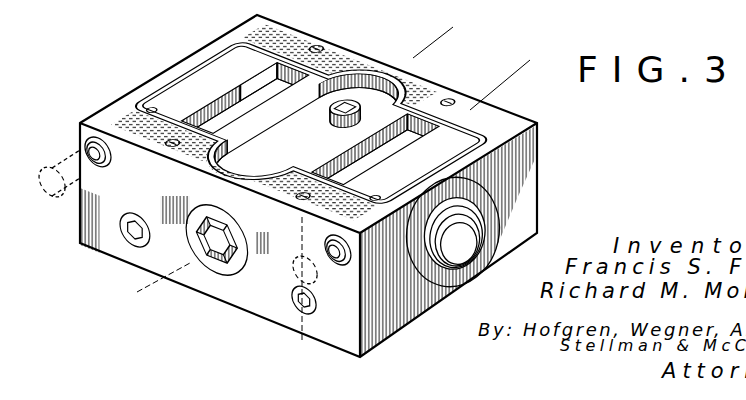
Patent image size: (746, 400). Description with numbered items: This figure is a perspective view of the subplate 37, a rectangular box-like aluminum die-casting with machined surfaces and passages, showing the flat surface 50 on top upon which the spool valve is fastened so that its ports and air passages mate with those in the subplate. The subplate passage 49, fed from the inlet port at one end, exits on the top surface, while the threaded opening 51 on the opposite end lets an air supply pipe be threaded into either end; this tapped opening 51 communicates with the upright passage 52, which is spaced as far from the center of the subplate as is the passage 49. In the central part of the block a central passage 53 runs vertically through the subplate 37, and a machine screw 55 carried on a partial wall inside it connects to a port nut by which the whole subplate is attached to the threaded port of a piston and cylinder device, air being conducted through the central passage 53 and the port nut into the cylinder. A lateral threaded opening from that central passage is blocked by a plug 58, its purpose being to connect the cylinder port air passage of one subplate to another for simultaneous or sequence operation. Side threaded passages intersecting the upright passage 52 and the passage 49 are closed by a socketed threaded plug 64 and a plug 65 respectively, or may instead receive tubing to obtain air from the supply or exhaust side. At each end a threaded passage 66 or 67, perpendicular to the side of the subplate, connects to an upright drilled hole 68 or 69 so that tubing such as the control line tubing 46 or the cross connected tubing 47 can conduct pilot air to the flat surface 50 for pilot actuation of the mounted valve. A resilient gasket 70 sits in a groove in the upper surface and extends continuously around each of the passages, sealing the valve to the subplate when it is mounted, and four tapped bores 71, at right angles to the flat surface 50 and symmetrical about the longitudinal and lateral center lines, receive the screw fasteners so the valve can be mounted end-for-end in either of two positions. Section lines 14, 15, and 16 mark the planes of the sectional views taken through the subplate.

The section line 14- 14 is at (537, 92).
The section line 15- 15 is at (420, 40).
The section line 16- 16 is at (282, 7).
The subplate 37 is at (540, 180).
The control line tubing 46 is at (73, 155).
The cross connected tubing 47 is at (291, 274).
The subplate passage 49 is at (244, 106).
The flat surface 50 is at (107, 108).
The threaded opening 51 is at (480, 222).
The upright passage 52 is at (375, 157).
The central passage 53 is at (335, 114).
The machine screw 55 is at (360, 70).
The plug 58 is at (222, 272).
The socketed threaded plug 64 is at (313, 311).
The plug 65 is at (122, 234).
The threaded passage 66 is at (338, 266).
The threaded passage 67 is at (97, 170).
The upright drilled hole 68 is at (153, 106).
The upright drilled hole 69 is at (379, 198).
The resilient gasket 70 is at (200, 64).
The tapped bores 71 is at (173, 148).